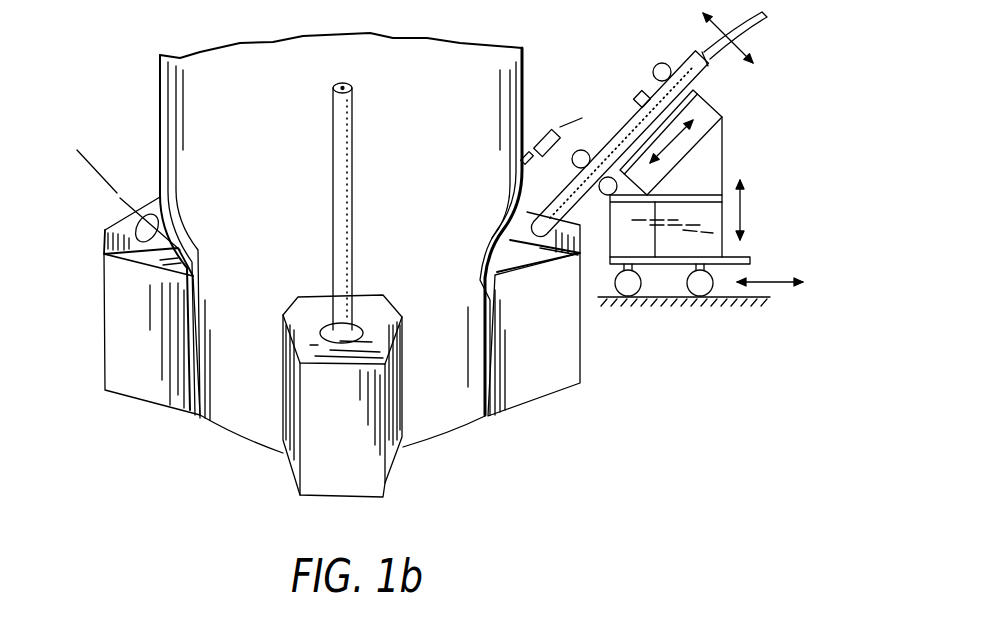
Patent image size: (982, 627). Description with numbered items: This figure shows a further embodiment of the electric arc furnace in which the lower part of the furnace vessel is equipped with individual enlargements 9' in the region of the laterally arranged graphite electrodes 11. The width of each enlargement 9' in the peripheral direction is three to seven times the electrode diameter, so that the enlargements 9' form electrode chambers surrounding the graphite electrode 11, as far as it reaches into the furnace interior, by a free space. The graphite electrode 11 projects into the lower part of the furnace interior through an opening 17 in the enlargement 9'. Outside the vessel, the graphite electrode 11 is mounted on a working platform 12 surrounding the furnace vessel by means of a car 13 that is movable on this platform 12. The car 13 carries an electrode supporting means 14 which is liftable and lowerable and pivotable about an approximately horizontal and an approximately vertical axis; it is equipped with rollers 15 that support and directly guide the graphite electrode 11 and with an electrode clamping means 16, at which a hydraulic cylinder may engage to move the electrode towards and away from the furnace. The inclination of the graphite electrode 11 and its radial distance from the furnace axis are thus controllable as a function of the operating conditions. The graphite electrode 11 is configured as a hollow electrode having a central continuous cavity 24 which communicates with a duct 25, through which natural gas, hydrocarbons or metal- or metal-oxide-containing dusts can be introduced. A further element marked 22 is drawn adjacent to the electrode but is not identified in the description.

The enlargement 9' is at (339, 347).
The graphite electrode 11 is at (333, 177).
The working platform 12 is at (660, 292).
The car 13 is at (750, 262).
The electrode supporting means 14 is at (746, 140).
The roller 15 is at (582, 150).
The electrode clamping means 16 is at (643, 92).
The opening 17 is at (560, 252).
The cylinder 22 is at (531, 135).
The cavity 24 is at (710, 63).
The duct 25 is at (750, 27).